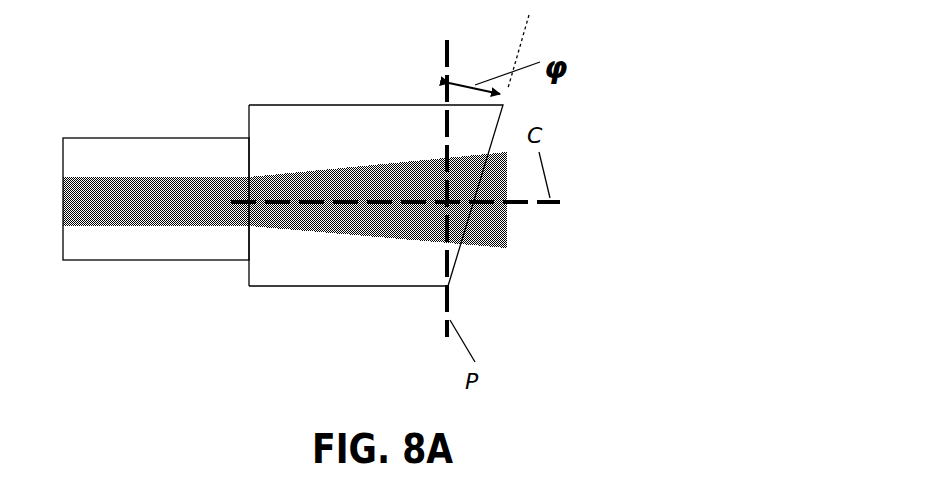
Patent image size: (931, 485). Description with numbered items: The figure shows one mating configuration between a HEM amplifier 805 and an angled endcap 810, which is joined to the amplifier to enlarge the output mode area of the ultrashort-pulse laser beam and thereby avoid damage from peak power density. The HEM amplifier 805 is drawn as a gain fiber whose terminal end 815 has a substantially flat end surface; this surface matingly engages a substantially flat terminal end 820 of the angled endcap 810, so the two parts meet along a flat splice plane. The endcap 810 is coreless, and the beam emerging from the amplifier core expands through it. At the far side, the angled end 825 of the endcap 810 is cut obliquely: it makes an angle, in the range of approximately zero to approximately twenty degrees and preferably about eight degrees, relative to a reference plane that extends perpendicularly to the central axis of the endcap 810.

The HEM amplifier 805 is at (156, 201).
The angled endcap 810 is at (376, 180).
The terminal end 815 is at (254, 246).
The terminal end 820 is at (246, 281).
The angled end 825 is at (489, 256).